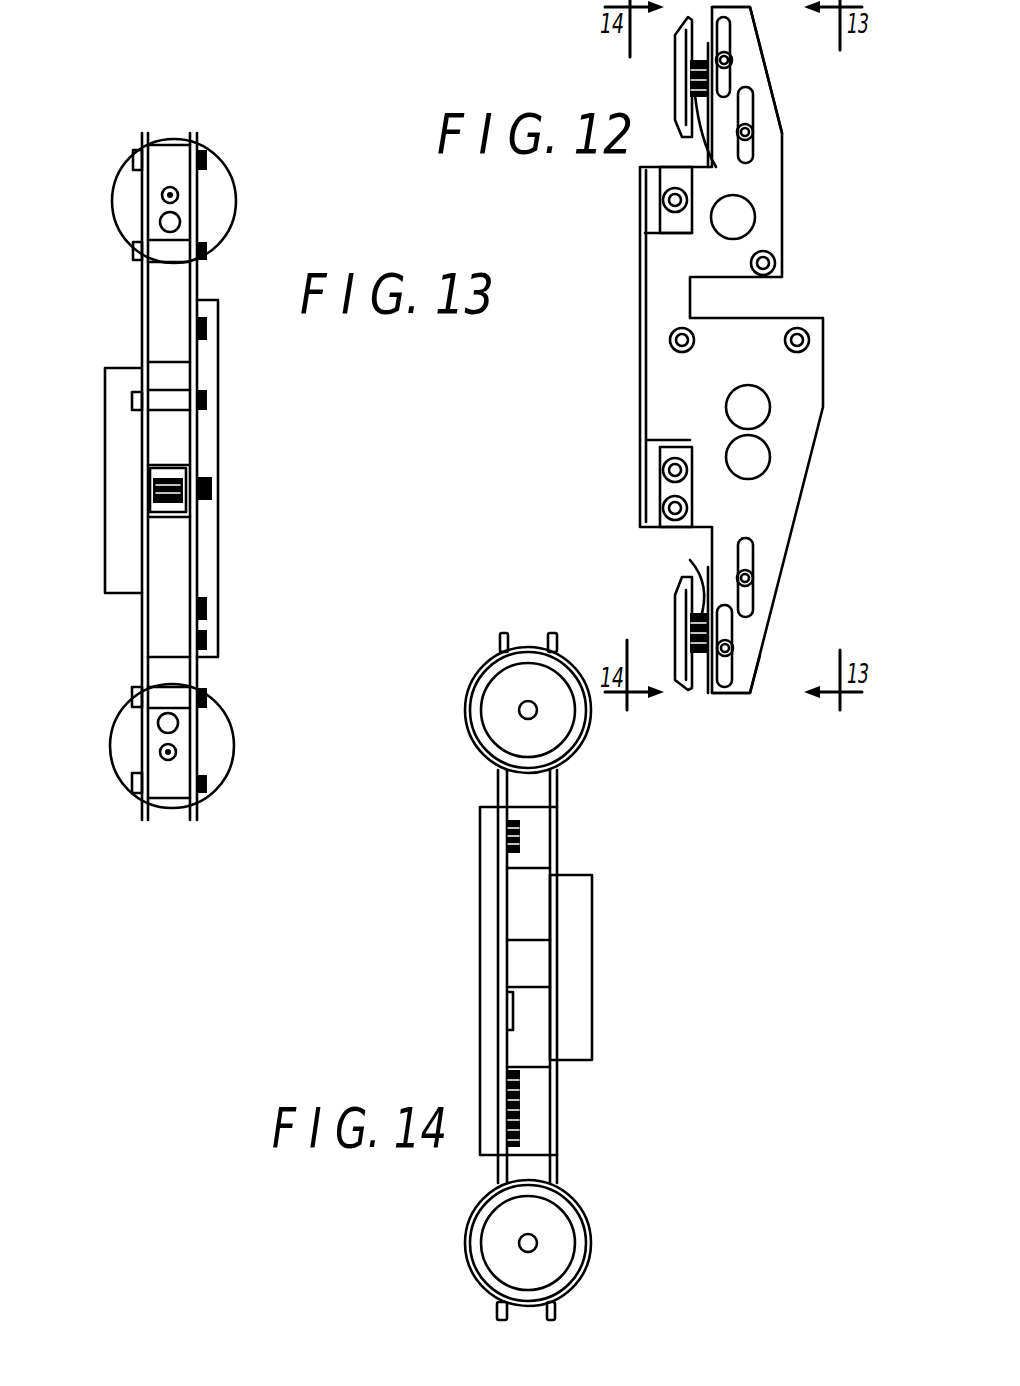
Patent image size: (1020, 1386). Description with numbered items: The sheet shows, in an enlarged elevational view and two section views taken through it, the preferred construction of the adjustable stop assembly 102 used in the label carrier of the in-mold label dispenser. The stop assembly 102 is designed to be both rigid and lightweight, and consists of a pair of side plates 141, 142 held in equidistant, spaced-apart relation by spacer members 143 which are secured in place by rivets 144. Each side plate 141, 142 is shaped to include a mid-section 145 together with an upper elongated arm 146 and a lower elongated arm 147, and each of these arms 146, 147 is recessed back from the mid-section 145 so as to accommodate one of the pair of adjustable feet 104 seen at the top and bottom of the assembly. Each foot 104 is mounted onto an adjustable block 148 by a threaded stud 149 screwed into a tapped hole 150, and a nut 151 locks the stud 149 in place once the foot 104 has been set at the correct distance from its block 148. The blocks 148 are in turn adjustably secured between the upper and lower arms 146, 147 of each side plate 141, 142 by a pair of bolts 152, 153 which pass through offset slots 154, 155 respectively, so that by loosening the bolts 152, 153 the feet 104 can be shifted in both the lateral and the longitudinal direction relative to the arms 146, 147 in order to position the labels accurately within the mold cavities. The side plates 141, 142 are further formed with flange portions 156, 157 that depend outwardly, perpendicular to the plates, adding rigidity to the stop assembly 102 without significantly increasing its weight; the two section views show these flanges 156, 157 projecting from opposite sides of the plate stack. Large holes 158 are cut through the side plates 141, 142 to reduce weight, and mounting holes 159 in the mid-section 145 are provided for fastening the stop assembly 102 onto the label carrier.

In FIG. 12, the adjustable stop assembly 102 is at (628, 410).
In FIG. 13, the adjustable stop assembly 102 is at (215, 116).
In FIG. 14, the adjustable stop assembly 102 is at (606, 895).
In FIG. 12, the adjustable feet 104 is at (676, 126).
In FIG. 13, the adjustable feet 104 is at (223, 212).
In FIG. 14, the adjustable feet 104 is at (477, 727).
In FIG. 12, the side plate 141 is at (769, 367).
In FIG. 13, the side plate 141 is at (140, 287).
In FIG. 14, the side plate 141 is at (557, 790).
In FIG. 13, the side plate 142 is at (197, 280).
In FIG. 14, the side plate 142 is at (500, 792).
In FIG. 13, the spacer members 143 is at (160, 332).
In FIG. 13, the rivets 144 is at (205, 330).
In FIG. 12, the mid-section 145 is at (780, 333).
In FIG. 12, the upper elongated arm 146 is at (768, 108).
In FIG. 13, the upper elongated arm 146 is at (197, 200).
In FIG. 14, the upper elongated arm 146 is at (500, 643).
In FIG. 12, the lower elongated arm 147 is at (770, 612).
In FIG. 13, the lower elongated arm 147 is at (168, 745).
In FIG. 14, the lower elongated arm 147 is at (553, 1310).
In FIG. 13, the adjustable blocks 148 is at (158, 185).
In FIG. 12, the threaded stud 149 is at (702, 357).
In FIG. 13, the tapped hole 150 is at (170, 187).
In FIG. 12, the nut 151 is at (692, 63).
In FIG. 12, the bolt 152 is at (733, 59).
In FIG. 13, the bolt 152 is at (203, 150).
In FIG. 12, the bolt 153 is at (753, 133).
In FIG. 13, the bolt 153 is at (207, 250).
In FIG. 12, the offset slot 154 is at (728, 86).
In FIG. 12, the offset slot 155 is at (750, 155).
In FIG. 12, the flange portion 156 is at (648, 268).
In FIG. 13, the flange portion 156 is at (113, 447).
In FIG. 14, the flange portion 156 is at (582, 970).
In FIG. 13, the flange portion 157 is at (208, 428).
In FIG. 14, the flange portion 157 is at (487, 937).
In FIG. 12, the large holes 158 is at (760, 453).
In FIG. 12, the mounting holes 159 is at (772, 258).